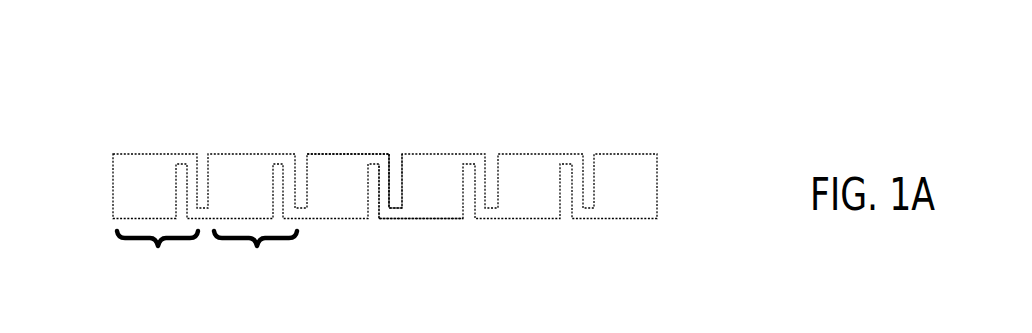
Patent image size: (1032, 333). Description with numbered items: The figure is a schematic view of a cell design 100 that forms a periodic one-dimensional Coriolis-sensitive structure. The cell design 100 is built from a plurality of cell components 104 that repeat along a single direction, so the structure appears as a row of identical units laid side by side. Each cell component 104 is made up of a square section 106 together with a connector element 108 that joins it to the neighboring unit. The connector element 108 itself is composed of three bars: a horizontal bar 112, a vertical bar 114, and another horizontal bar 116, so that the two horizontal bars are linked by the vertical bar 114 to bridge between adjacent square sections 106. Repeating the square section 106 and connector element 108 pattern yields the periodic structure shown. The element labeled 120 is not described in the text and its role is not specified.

The cell design 100 is at (660, 83).
The cell component 104 is at (260, 252).
The square section 106 is at (331, 173).
The connector element 108 is at (397, 237).
The horizontal bar 112 is at (379, 160).
The vertical bar 114 is at (389, 185).
The horizontal bar 116 is at (400, 217).
The substrate 120 is at (663, 332).